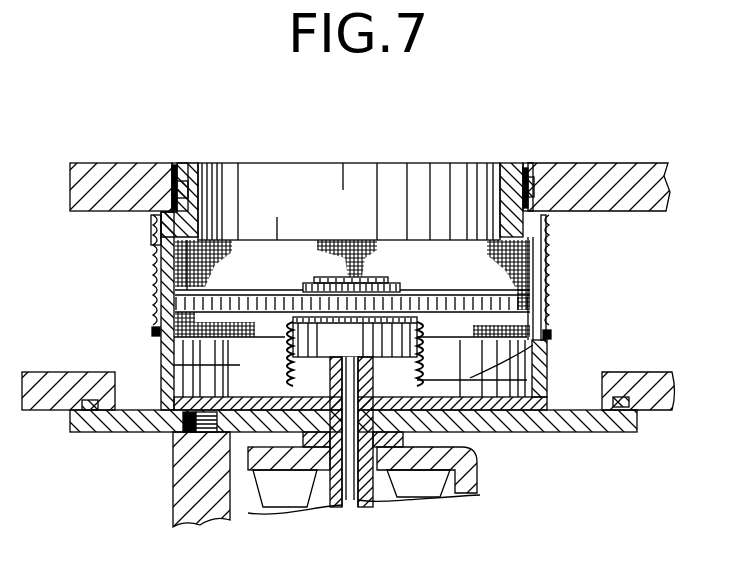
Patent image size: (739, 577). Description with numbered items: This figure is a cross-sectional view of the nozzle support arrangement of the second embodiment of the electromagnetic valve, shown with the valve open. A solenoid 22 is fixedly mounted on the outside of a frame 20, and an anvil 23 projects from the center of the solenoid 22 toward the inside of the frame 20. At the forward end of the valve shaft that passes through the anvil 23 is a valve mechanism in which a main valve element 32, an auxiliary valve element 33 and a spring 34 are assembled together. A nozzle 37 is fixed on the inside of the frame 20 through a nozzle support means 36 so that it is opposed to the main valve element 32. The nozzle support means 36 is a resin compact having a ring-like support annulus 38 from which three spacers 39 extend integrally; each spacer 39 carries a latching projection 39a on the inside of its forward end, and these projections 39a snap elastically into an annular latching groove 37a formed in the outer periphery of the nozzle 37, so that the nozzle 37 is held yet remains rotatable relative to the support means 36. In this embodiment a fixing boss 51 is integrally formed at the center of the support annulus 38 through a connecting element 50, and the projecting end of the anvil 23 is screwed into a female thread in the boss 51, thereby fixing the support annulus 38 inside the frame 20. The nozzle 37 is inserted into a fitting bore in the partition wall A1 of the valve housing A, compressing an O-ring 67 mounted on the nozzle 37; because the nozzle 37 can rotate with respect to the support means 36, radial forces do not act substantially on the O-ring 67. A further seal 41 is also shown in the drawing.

The O-ring 67 is at (178, 165).
The main valve element 32 is at (266, 300).
The nozzle 37 is at (507, 165).
The latching groove 37a is at (530, 164).
The partition wall A1 is at (603, 164).
The latching projection 39a is at (547, 228).
The seal 41 is at (150, 245).
The spacer 39 is at (152, 292).
The nozzle support means 36 is at (148, 331).
The support annulus 38 is at (172, 368).
The auxiliary valve element 33 is at (288, 338).
The spring 34 is at (420, 325).
The fixing boss 51 is at (543, 363).
The valve housing A is at (652, 372).
The connecting element 50 is at (170, 422).
The frame 20 is at (615, 432).
The anvil 23 is at (352, 497).
The solenoid 22 is at (418, 506).